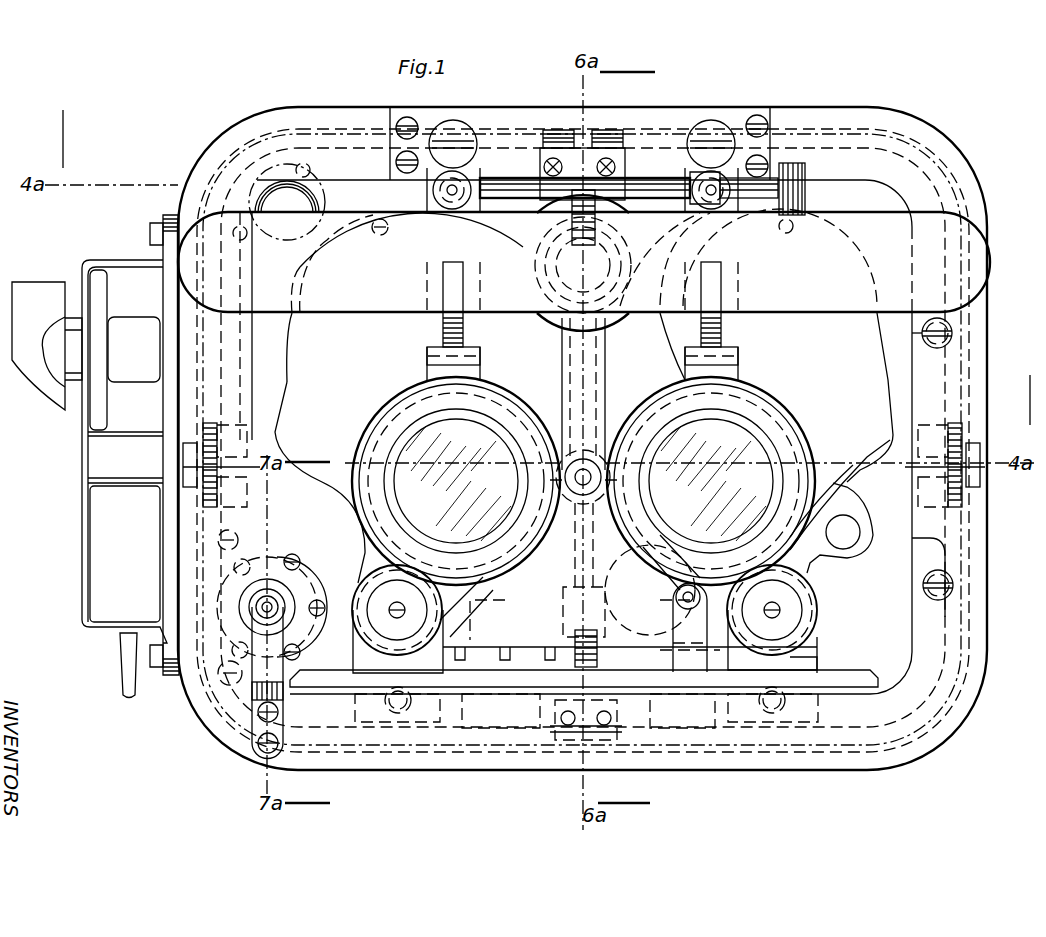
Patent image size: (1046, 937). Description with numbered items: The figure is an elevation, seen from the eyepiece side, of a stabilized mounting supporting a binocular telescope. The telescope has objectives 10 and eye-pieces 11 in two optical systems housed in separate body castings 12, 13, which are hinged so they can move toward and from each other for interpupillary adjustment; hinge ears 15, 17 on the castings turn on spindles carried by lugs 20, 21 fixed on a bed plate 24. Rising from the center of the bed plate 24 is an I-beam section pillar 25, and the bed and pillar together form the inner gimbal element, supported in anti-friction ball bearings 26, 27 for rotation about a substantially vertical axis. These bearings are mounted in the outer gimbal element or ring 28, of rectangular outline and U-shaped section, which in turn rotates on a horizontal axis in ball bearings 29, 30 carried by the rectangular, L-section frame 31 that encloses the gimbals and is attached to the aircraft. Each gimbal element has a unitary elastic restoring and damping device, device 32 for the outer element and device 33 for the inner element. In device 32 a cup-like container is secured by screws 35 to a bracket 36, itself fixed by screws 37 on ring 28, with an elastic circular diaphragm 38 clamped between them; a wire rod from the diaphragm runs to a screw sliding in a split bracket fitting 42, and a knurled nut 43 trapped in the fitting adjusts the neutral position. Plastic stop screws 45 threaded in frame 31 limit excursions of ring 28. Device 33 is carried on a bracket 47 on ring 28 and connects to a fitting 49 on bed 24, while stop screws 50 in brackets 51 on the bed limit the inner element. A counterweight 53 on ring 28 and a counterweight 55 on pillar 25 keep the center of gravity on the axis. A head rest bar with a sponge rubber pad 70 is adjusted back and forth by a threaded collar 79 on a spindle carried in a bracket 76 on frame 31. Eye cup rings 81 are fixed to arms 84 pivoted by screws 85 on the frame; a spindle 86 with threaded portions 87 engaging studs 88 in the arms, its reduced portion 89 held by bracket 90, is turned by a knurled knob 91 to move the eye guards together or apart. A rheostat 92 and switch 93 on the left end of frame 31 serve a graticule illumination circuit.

The objectives 10 is at (292, 330).
The eye-pieces 11 is at (420, 436).
The body casting 12 is at (880, 482).
The body casting 13 is at (332, 495).
The hinge ear 15 is at (817, 567).
The hinge ear 17 is at (312, 560).
The lug 20 is at (808, 653).
The lug 21 is at (440, 647).
The bed plate 24 is at (852, 673).
The pillar 25 is at (606, 395).
The anti-friction ball bearing 26 is at (552, 722).
The anti-friction ball bearing 27 is at (620, 165).
The outer gimbal element 28 is at (665, 137).
The anti-friction ball bearing 29 is at (925, 423).
The anti-friction ball bearing 30 is at (232, 413).
The frame 31 is at (985, 558).
The restoring and damping device 32 is at (285, 553).
The restoring and damping device 33 is at (640, 580).
The screws 35 is at (235, 622).
The bracket 36 is at (372, 632).
The screws 37 is at (218, 540).
The elastic circular diaphragm 38 is at (372, 590).
The split bracket fitting 42 is at (250, 725).
The knurled nut 43 is at (296, 598).
The stop screws 45 is at (936, 348).
The bracket 47 is at (598, 642).
The split bracket fitting 49 is at (690, 648).
The stop screws 50 is at (385, 703).
The brackets 51 is at (445, 720).
The counterweight 53 is at (318, 203).
The counterweight 55 is at (553, 540).
The pad 70 is at (340, 310).
The bracket 76 is at (528, 115).
The threaded collar 79 is at (560, 322).
The ring 81 is at (410, 392).
The arm 84 is at (432, 272).
The screw 85 is at (456, 130).
The spindle 86 is at (650, 192).
The threaded portions 87 is at (387, 230).
The studs 88 is at (455, 208).
The reduced diameter portion 89 is at (629, 184).
The bracket 90 is at (544, 165).
The knurled knob 91 is at (806, 172).
The rheostat 92 is at (133, 320).
The switch 93 is at (105, 500).